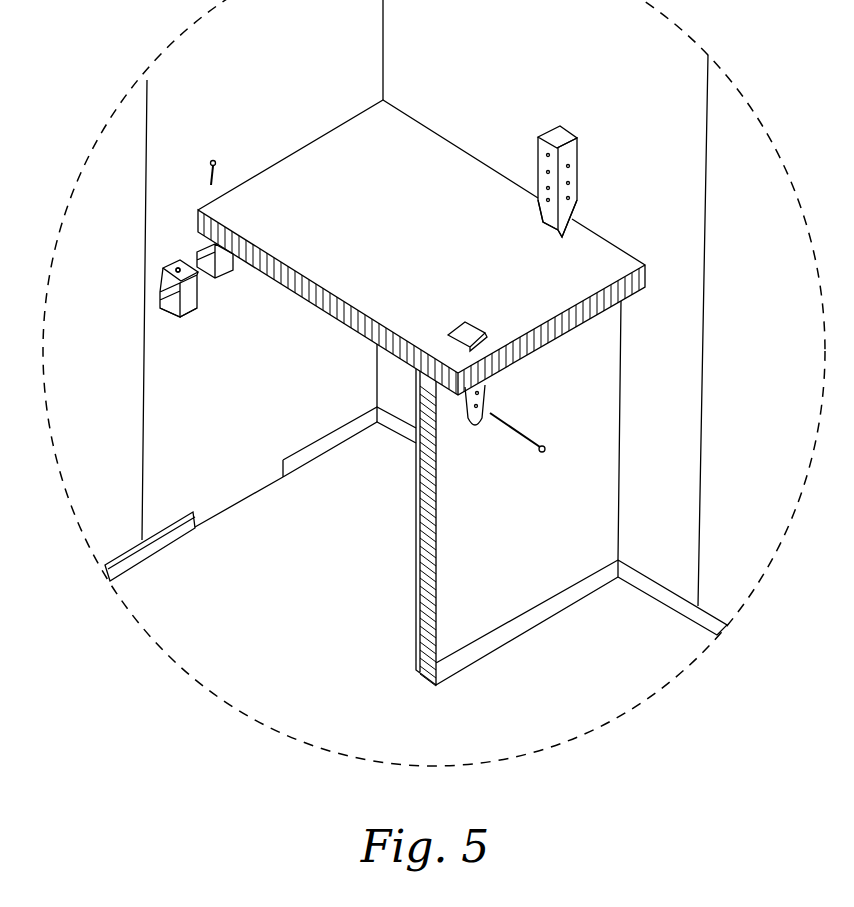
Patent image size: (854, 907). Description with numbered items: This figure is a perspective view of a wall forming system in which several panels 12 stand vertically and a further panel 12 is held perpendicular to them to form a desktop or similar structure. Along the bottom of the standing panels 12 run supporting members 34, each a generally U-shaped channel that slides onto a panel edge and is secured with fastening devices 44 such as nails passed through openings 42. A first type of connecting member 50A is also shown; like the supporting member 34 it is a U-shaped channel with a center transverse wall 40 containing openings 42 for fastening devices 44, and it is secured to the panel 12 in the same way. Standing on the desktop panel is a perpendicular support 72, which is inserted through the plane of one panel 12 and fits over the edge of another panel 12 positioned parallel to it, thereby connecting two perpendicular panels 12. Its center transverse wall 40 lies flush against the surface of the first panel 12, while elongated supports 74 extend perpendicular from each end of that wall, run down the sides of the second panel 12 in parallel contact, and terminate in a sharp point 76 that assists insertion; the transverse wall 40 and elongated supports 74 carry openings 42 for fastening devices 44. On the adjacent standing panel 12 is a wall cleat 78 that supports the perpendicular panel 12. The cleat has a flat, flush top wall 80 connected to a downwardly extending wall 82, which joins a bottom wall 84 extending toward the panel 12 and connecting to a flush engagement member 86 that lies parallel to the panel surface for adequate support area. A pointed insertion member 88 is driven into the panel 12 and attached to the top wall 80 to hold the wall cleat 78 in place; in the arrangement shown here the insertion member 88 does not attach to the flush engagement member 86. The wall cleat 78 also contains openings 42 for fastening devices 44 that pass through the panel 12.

The panel 12 is at (250, 70).
The supporting member 34 is at (153, 557).
The center transverse wall 40 is at (553, 130).
The openings 42 is at (566, 214).
The fastening devices 44 is at (209, 170).
The first type of connecting member 50A is at (333, 452).
The perpendicular support 72 is at (404, 185).
The elongated supports 74 is at (538, 166).
The sharp point 76 is at (548, 222).
The wall cleat 78 is at (162, 276).
The top wall 80 is at (172, 266).
The downwardly extending wall 82 is at (196, 290).
The bottom wall 84 is at (172, 316).
The flush engagement member 86 is at (162, 297).
The insertion member 88 is at (172, 270).